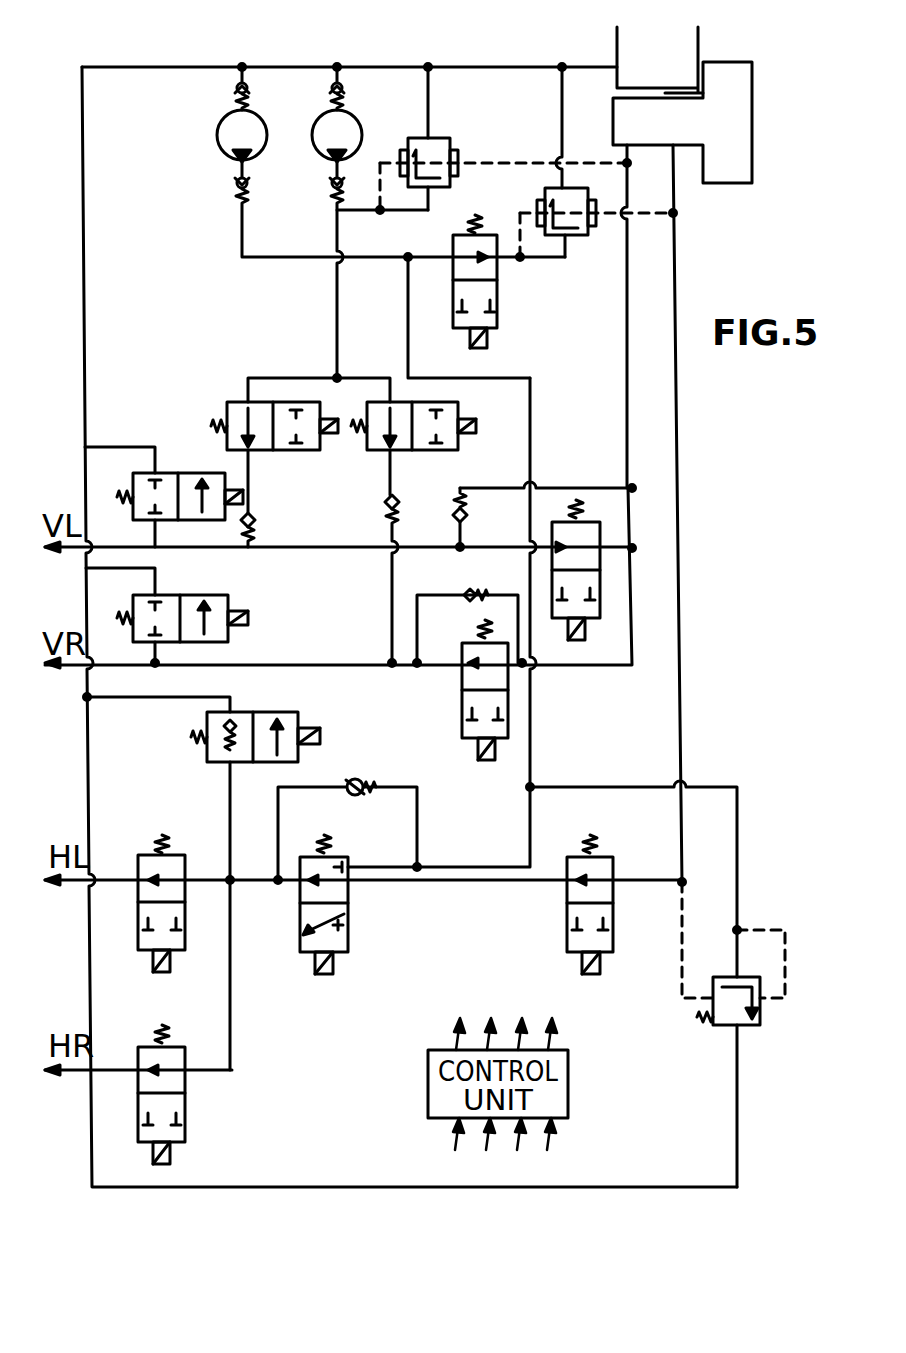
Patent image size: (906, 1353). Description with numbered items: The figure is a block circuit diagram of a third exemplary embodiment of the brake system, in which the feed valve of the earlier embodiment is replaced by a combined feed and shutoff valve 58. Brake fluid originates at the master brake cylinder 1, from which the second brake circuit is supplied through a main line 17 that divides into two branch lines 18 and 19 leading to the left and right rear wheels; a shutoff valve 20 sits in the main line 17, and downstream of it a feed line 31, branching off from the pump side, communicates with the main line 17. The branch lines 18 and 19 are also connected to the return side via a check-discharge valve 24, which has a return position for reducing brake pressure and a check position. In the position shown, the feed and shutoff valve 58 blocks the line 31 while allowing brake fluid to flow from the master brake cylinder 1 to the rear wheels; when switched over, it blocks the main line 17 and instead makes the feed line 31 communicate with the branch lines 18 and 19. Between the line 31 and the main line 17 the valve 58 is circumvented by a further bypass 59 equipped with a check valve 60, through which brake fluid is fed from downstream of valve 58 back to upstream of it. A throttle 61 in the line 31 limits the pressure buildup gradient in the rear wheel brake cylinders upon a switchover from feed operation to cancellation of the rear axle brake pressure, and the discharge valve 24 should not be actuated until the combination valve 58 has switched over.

The master brake cylinder 1 is at (735, 158).
The main line 17 is at (682, 527).
The branch line 18 is at (233, 1018).
The branch line 19 is at (217, 883).
The shutoff valve 20 is at (567, 895).
The check-discharge valve 24 is at (290, 712).
The line 31 is at (535, 743).
The feed and shutoff valve 58 is at (350, 937).
The bypass 59 is at (417, 818).
The check valve 60 is at (358, 772).
The throttle 61 is at (514, 408).